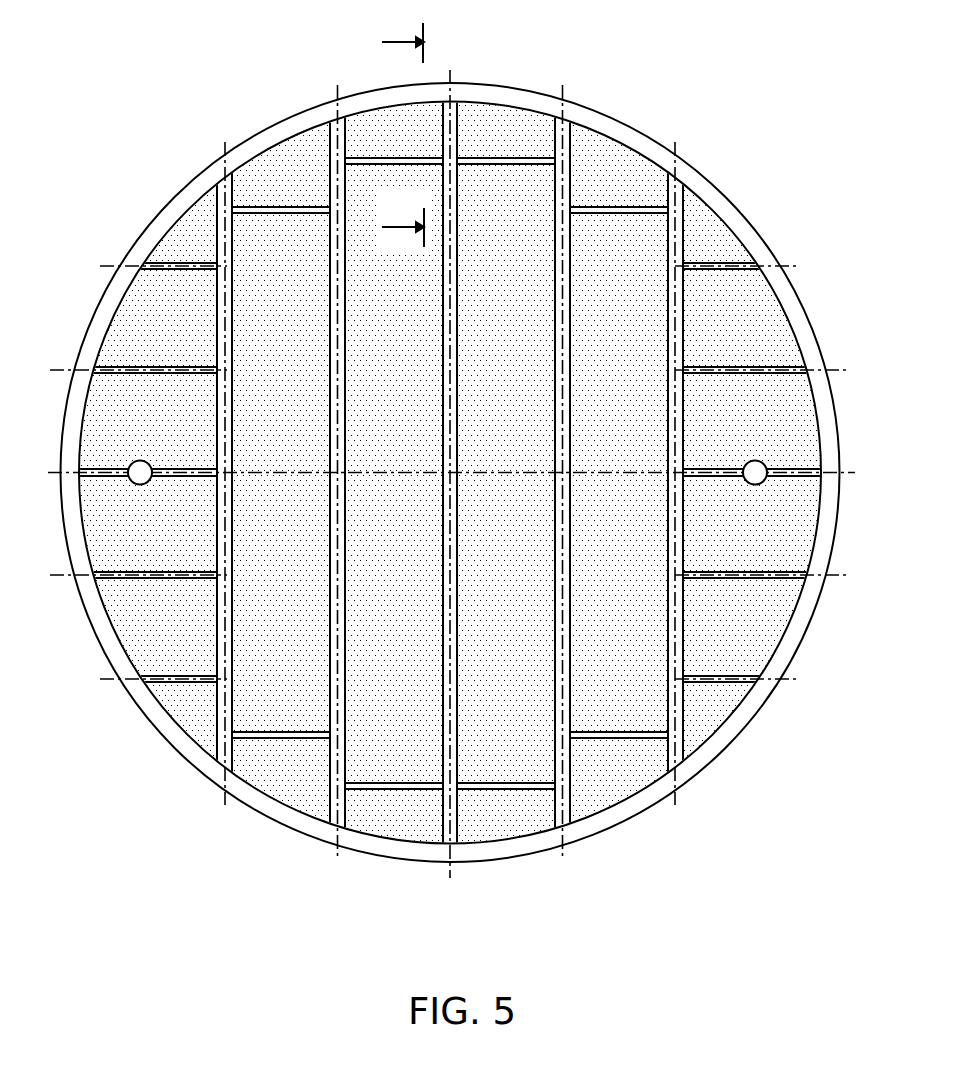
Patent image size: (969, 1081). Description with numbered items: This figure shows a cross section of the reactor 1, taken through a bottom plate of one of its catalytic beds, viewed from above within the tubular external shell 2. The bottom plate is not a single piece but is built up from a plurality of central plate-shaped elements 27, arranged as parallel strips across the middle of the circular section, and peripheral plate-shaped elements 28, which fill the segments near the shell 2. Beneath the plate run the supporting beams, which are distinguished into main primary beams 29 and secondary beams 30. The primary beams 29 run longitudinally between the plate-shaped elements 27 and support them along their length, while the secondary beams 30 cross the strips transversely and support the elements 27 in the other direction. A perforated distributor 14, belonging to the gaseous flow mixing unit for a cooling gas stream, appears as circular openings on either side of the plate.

The reactor 1 is at (464, 501).
The tubular external shell 2 is at (728, 730).
The perforated distributor 14 is at (140, 485).
The central plate-shaped elements 27 is at (642, 253).
The peripheral plate-shaped elements 28 is at (493, 120).
The main primary beams 29 is at (567, 162).
The secondary beams 30 is at (733, 257).